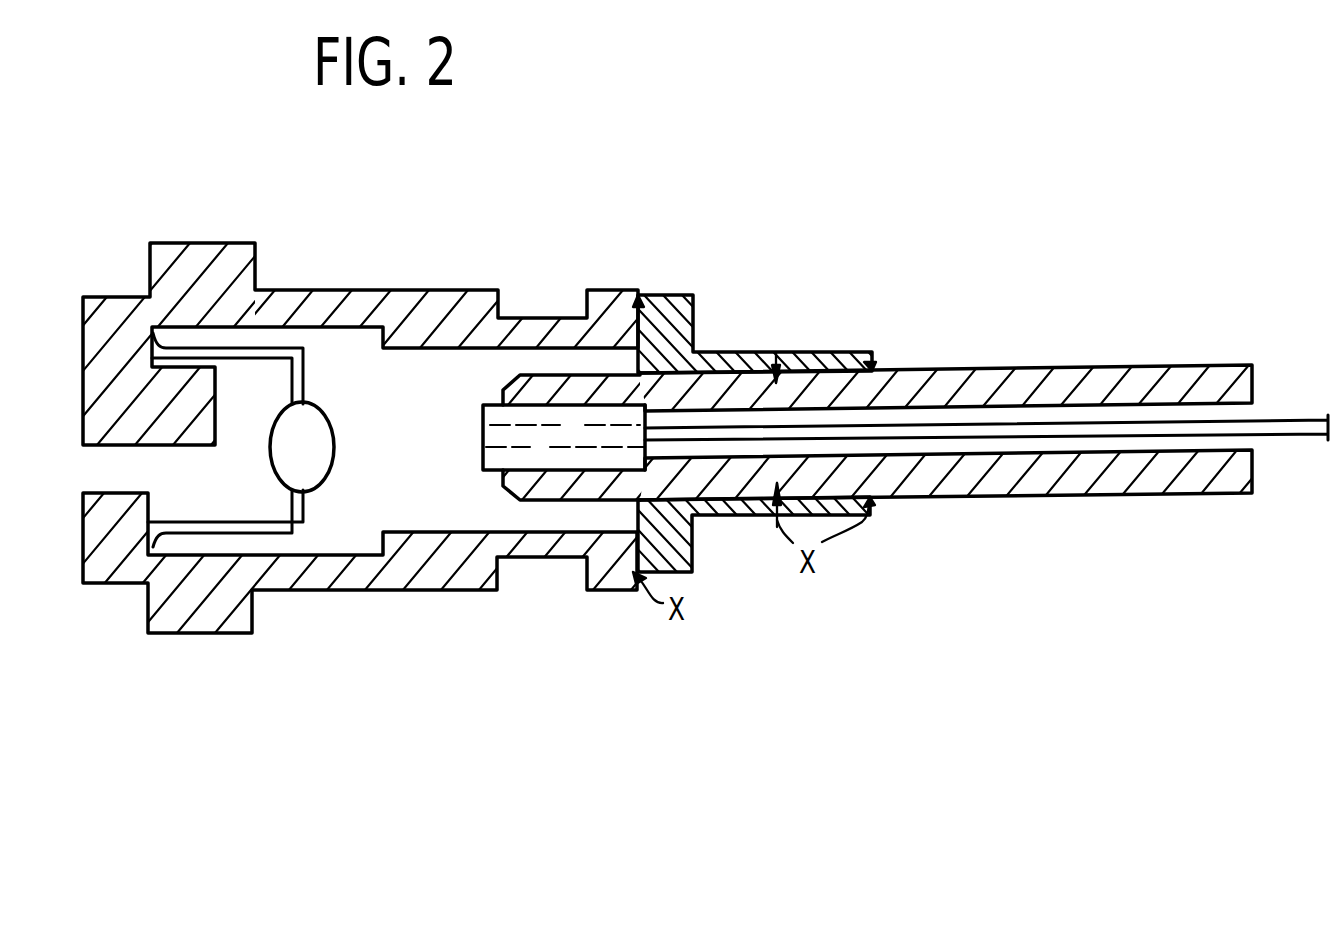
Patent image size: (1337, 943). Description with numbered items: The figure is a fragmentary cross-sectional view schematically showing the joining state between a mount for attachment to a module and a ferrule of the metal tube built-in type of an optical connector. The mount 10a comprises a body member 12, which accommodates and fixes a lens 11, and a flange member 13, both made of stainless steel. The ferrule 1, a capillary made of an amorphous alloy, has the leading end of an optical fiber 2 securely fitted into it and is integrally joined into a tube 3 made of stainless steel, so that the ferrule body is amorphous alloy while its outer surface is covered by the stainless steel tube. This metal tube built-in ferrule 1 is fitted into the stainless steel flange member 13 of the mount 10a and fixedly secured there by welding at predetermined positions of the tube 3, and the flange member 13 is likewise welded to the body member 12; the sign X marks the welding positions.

The ferrule 1 is at (547, 458).
The optical fiber 2 is at (1118, 433).
The tube 3 is at (998, 368).
The mount 10a is at (375, 394).
The lens 11 is at (334, 421).
The body member 12 is at (305, 290).
The flange member 13 is at (713, 355).